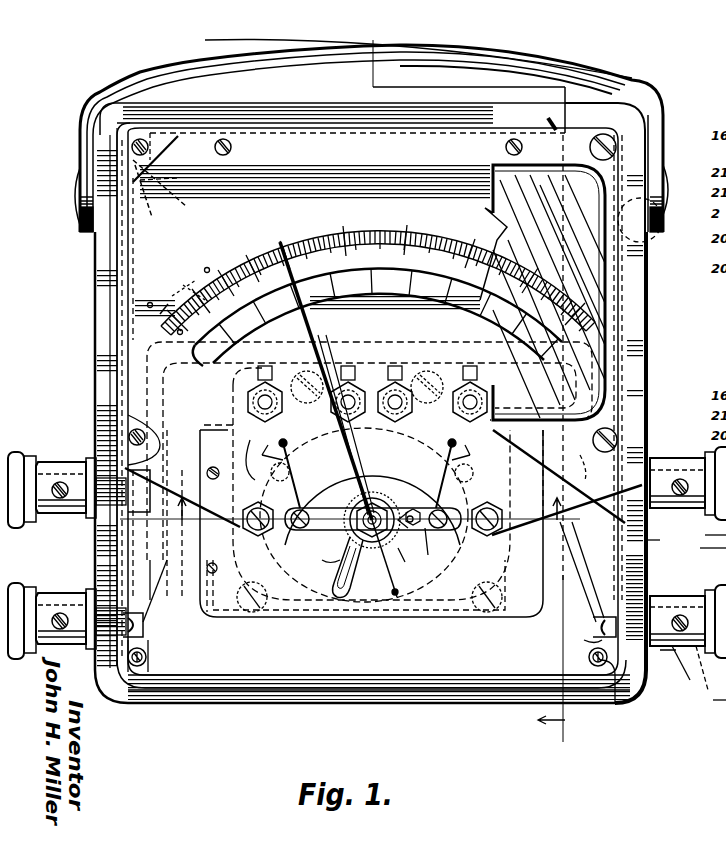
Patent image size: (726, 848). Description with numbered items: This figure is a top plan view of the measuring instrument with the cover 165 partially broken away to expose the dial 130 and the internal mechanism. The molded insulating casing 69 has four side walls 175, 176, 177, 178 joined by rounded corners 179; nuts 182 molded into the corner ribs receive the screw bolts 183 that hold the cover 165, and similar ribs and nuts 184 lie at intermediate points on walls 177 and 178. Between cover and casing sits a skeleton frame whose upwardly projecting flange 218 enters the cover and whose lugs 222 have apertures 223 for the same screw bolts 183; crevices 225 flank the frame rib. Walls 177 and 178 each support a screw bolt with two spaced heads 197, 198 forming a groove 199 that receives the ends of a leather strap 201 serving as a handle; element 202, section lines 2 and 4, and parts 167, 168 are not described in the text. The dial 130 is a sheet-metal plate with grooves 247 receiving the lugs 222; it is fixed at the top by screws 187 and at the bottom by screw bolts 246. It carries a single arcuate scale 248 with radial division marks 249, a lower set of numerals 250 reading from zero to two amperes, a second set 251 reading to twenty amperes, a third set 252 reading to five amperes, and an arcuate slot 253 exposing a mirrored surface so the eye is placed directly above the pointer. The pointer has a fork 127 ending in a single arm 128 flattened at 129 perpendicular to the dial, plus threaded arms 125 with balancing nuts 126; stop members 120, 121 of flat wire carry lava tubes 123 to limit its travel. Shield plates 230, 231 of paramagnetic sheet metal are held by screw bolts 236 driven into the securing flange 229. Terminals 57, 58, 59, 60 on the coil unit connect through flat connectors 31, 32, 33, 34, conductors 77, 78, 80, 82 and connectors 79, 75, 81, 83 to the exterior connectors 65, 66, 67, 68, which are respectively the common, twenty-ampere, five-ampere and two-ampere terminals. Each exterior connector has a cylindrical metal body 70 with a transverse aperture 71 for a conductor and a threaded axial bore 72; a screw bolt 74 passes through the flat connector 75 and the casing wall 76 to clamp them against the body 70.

The leather strap 201 is at (90, 100).
The cover arch 202 is at (203, 70).
The crevices 225 is at (263, 122).
The side wall 175 is at (346, 112).
The side wall 177 is at (100, 342).
The side wall 178 is at (640, 294).
The side wall 176 is at (400, 702).
The casing 69 is at (293, 700).
The rounded corners 179 is at (622, 700).
The spaced head 198 is at (72, 193).
The groove 199 is at (664, 175).
The spaced head 197 is at (648, 242).
The screw bolts 183 is at (614, 143).
The nuts 182 is at (137, 668).
The ribs and nuts 184 is at (133, 435).
The apertures 223 is at (150, 150).
The screw bolts 187 is at (230, 152).
The dial 130 is at (349, 366).
The projecting lugs 222 is at (142, 428).
The grooves 247 is at (584, 456).
The terminal 57 is at (500, 398).
The radial division marks 249 is at (346, 240).
The arcuate scale 248 is at (365, 236).
The arcuate slot 253 is at (424, 276).
The lower set of numerals 250 is at (200, 318).
The second set of numerals 251 is at (186, 290).
The third set of numerals 252 is at (178, 280).
The conductor 82 is at (168, 312).
The flattened portion 129 is at (289, 248).
The single arm 128 is at (330, 350).
The conductor 80 is at (306, 348).
The conductor 77 is at (595, 350).
The conductor 78 is at (580, 370).
The terminal 60 is at (240, 395).
The connector 34 is at (278, 364).
The connector 33 is at (348, 380).
The terminal 59 is at (382, 384).
The connector 31 is at (466, 366).
The connector 32 is at (390, 366).
The terminal 58 is at (426, 372).
The connector 79 is at (606, 505).
The connector 83 is at (147, 505).
The fork 127 is at (372, 510).
The stop member 120 is at (350, 502).
The stop member 121 is at (466, 510).
The screw bolts 246 is at (258, 504).
The tube of lava 123 is at (284, 446).
The nuts 126 is at (410, 505).
The threaded arms 125 is at (345, 542).
The section line 4- 4 is at (369, 522).
The section line 2- 2 is at (458, 391).
The shield plate 230 is at (325, 617).
The securing flange 229 is at (218, 620).
The shield plate 231 is at (166, 560).
The screw bolts 236 is at (208, 569).
The connector 81 is at (145, 628).
The flat electrical connector 75 is at (598, 614).
The screw bolt 74 is at (593, 632).
The electrical connector 68 is at (78, 462).
The electrical connector 67 is at (78, 594).
The electrical connector 65 is at (664, 470).
The electrical connector 66 is at (694, 600).
The wall 76 is at (643, 573).
The cover 165 is at (707, 525).
The post washer 167 is at (708, 538).
The post nut 168 is at (712, 560).
The cylindrical exterior metal body 70 is at (676, 646).
The transverse aperture 71 is at (685, 668).
The axial bore 72 is at (708, 676).
The upwardly projecting flange 218 is at (708, 715).